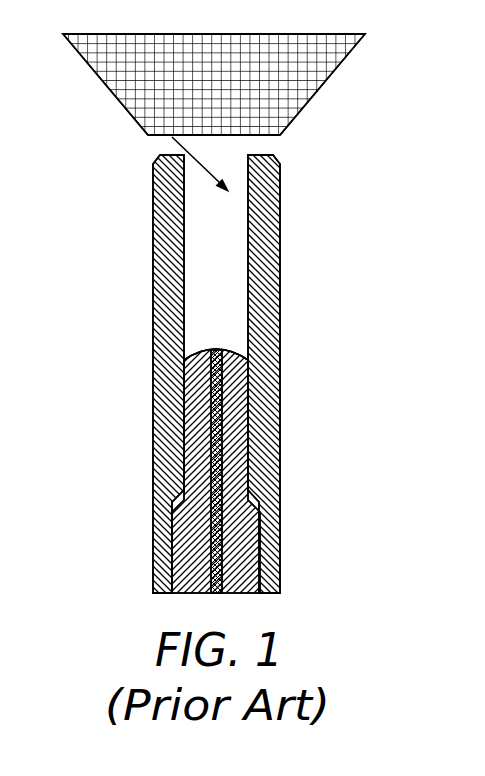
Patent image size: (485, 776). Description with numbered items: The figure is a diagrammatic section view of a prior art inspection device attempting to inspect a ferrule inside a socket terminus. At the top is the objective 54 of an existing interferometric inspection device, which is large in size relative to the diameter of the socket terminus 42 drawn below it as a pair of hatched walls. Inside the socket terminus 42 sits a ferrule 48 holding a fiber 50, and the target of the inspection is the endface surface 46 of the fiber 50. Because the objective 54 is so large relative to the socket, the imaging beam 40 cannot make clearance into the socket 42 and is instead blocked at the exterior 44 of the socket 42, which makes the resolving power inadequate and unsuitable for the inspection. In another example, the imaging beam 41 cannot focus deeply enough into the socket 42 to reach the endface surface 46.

The objective 54 is at (326, 78).
The socket terminus 42 is at (273, 255).
The exterior of socket 44 is at (253, 156).
The imaging beam 40 is at (199, 143).
The imaging beam 41 is at (173, 142).
The endface surface 46 is at (222, 348).
The ferrule 48 is at (254, 393).
The fiber 50 is at (222, 452).